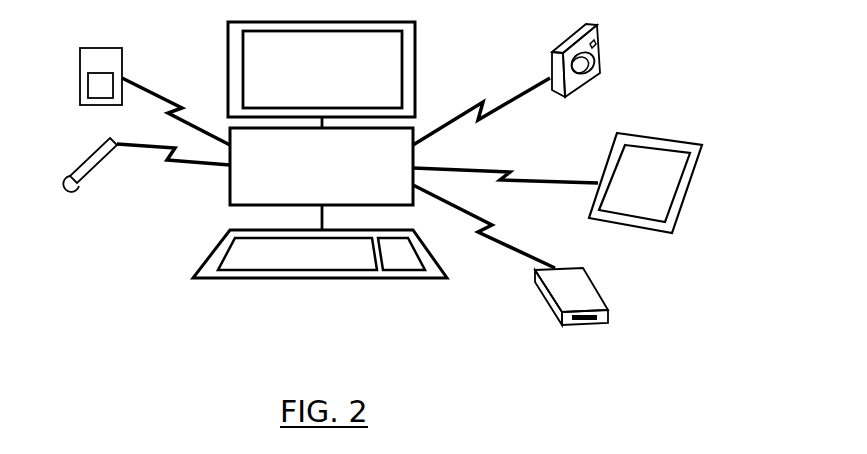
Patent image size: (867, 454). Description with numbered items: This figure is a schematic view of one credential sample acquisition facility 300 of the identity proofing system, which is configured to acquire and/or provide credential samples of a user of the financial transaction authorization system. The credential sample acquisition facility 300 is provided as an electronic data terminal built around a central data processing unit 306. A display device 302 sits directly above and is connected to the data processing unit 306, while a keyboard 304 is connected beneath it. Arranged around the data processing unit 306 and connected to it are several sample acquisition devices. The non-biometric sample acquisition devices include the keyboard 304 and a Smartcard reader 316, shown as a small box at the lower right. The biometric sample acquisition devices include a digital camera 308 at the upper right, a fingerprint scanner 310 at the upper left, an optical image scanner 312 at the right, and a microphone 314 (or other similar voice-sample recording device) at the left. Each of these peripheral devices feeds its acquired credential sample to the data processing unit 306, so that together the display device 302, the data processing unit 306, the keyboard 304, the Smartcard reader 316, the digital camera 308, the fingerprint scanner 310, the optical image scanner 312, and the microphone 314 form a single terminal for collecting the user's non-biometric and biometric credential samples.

The credential sample acquisition facility 300 is at (255, 362).
The display device 302 is at (415, 58).
The keyboard 304 is at (393, 280).
The data processing unit 306 is at (413, 163).
The digital camera 308 is at (600, 62).
The fingerprint scanner 310 is at (80, 78).
The optical image scanner 312 is at (687, 198).
The microphone 314 is at (93, 153).
The Smartcard reader 316 is at (543, 297).